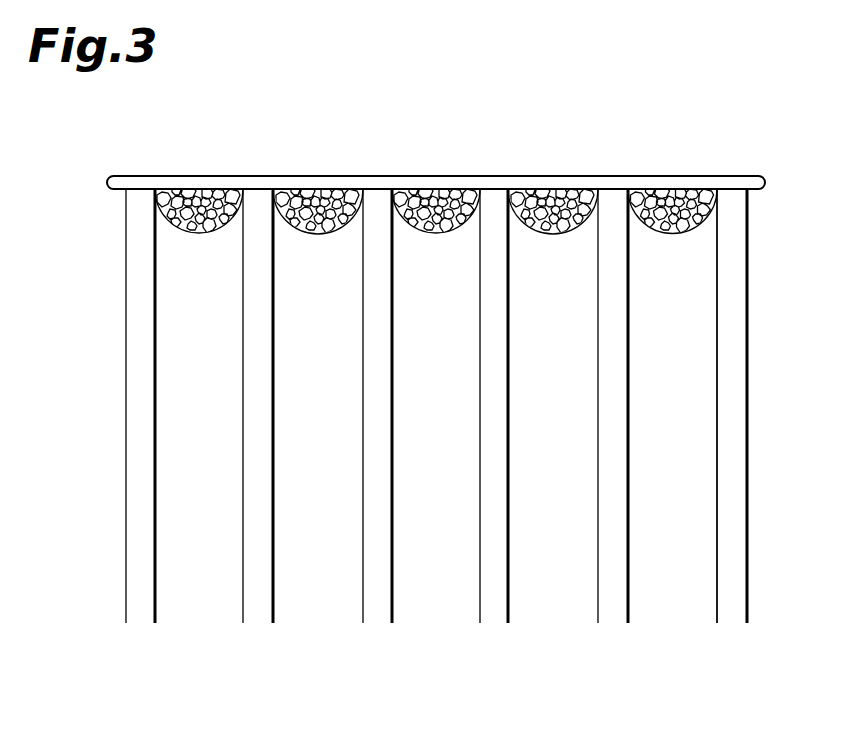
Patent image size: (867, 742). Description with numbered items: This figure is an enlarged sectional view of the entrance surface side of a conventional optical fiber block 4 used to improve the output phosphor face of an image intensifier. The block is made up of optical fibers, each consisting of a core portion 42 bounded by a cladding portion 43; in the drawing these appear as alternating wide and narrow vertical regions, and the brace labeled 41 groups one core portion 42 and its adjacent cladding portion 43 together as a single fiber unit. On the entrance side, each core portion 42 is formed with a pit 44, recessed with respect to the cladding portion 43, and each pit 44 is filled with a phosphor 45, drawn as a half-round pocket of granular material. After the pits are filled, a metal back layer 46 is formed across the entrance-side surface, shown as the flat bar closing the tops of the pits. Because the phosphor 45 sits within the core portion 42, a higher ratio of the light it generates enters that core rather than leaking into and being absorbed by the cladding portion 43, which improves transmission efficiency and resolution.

The optical fiber block 4 is at (100, 145).
The electrode pair 41 is at (748, 688).
The core portion 42 is at (676, 620).
The cladding portion 43 is at (732, 620).
The pit 44 is at (703, 216).
The phosphor 45 is at (678, 192).
The metal back layer 46 is at (651, 177).